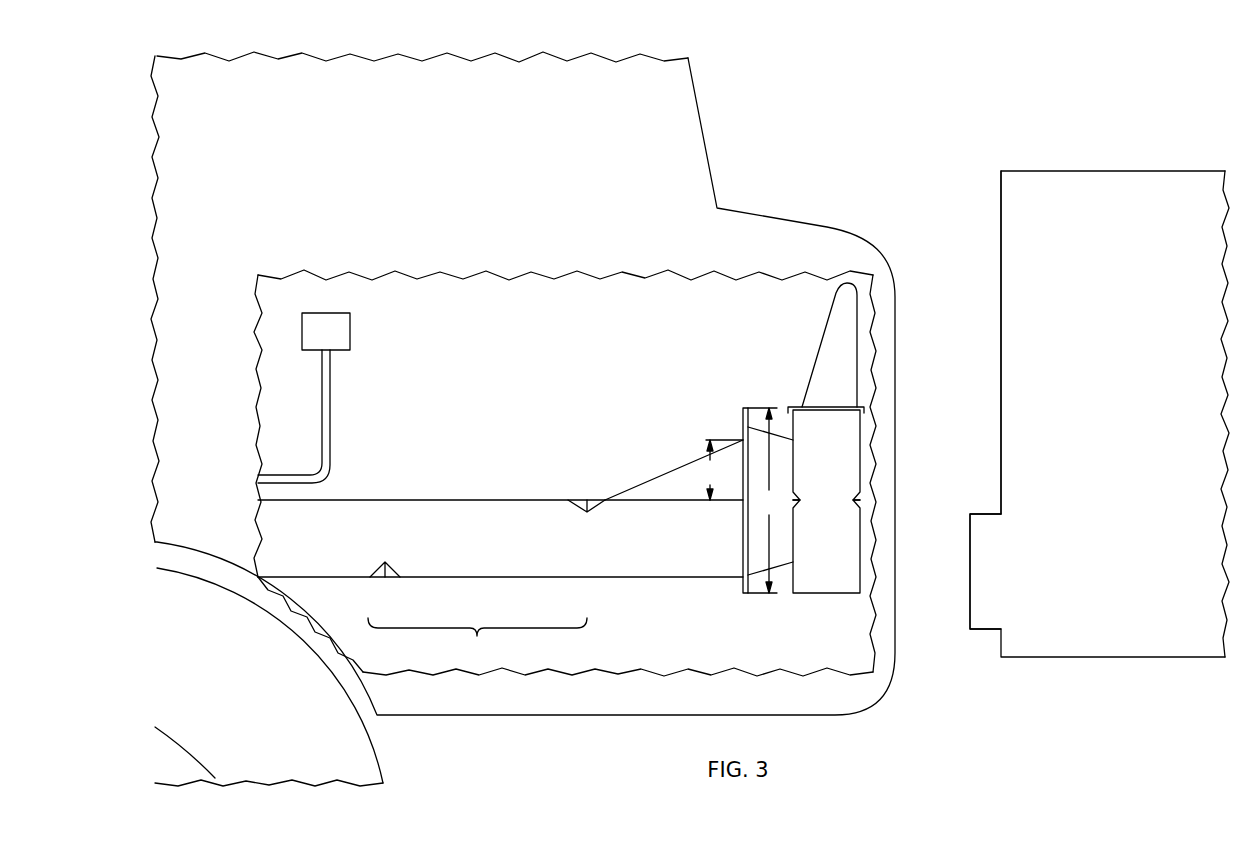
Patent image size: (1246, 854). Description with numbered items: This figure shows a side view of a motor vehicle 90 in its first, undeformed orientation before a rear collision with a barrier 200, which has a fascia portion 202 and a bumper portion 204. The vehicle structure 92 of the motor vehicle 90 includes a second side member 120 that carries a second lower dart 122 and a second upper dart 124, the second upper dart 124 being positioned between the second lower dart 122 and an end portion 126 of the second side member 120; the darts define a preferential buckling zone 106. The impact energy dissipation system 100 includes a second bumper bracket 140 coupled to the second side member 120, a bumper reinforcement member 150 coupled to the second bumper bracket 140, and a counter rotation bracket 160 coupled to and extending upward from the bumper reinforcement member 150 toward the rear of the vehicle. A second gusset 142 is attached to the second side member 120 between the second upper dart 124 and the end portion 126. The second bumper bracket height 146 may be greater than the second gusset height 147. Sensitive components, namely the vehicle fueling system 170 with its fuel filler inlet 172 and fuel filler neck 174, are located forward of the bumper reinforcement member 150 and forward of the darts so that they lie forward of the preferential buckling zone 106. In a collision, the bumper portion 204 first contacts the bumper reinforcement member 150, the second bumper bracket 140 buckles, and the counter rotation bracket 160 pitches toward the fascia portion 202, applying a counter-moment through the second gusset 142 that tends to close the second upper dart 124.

The motor vehicle 90 is at (710, 123).
The vehicle structure 92 is at (563, 637).
The impact energy dissipation system 100 is at (603, 403).
The preferential buckling zone 106 is at (477, 642).
The second side member 120 is at (500, 557).
The second lower dart 122 is at (385, 578).
The second upper dart 124 is at (580, 498).
The end portion 126 is at (735, 572).
The second bumper bracket 140 is at (793, 440).
The second gusset 142 is at (690, 463).
The second bumper bracket height 146 is at (768, 500).
The second gusset height 147 is at (717, 470).
The bumper reinforcement member 150 is at (823, 595).
The counter rotation bracket 160 is at (817, 338).
The vehicle fueling system 170 is at (351, 381).
The fuel filler inlet 172 is at (343, 350).
The fuel filler neck 174 is at (330, 443).
The barrier 200 is at (1099, 454).
The fascia portion 202 is at (1001, 335).
The bumper portion 204 is at (1001, 571).